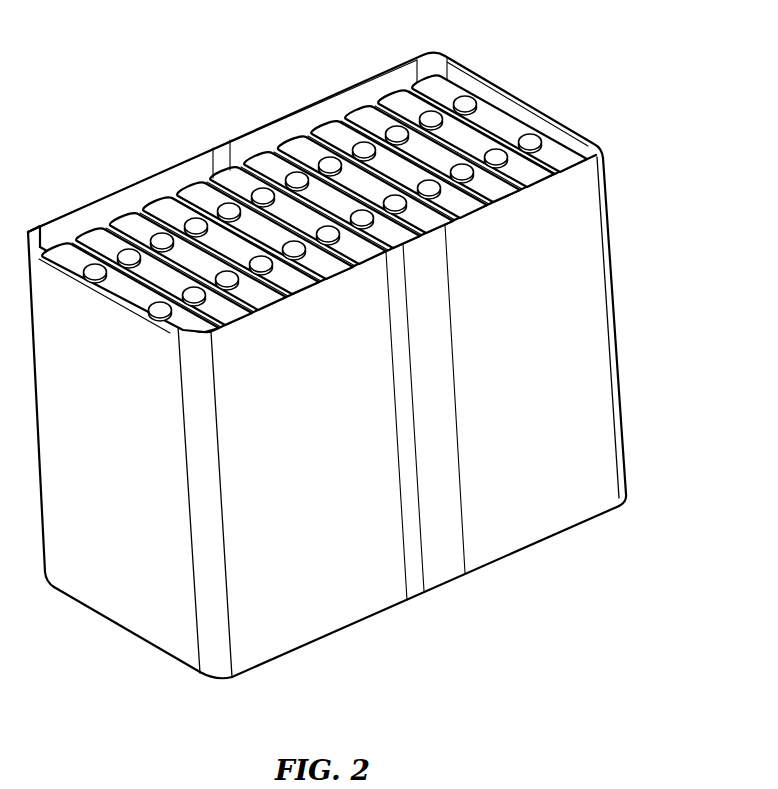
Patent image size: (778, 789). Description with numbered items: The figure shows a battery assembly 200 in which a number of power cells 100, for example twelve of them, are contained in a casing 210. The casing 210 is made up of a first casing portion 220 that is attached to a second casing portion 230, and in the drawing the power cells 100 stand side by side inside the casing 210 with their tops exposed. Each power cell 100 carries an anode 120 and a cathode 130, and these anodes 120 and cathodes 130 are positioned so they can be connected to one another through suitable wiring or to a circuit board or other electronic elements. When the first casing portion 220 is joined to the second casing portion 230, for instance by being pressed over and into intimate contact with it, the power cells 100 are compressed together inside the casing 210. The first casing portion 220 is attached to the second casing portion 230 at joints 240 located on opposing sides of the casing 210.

The power cell 100 is at (173, 207).
The anode 120 is at (397, 135).
The cathode 130 is at (528, 138).
The battery assembly 200 is at (542, 581).
The casing 210 is at (116, 594).
The first casing portion 220 is at (307, 622).
The second casing portion 230 is at (553, 515).
The joint 240 is at (262, 113).